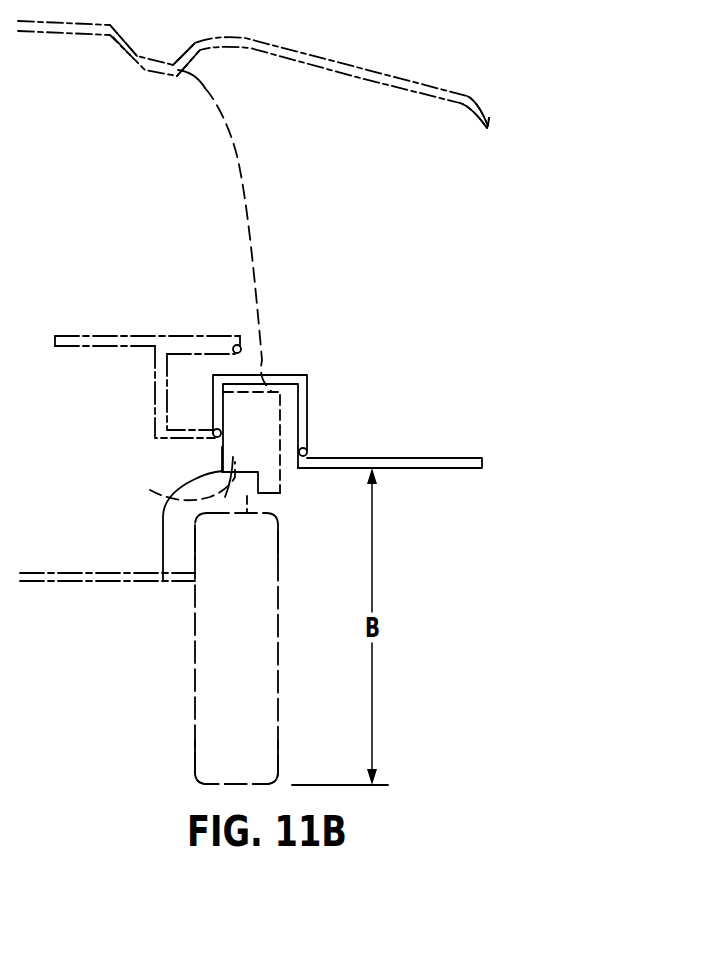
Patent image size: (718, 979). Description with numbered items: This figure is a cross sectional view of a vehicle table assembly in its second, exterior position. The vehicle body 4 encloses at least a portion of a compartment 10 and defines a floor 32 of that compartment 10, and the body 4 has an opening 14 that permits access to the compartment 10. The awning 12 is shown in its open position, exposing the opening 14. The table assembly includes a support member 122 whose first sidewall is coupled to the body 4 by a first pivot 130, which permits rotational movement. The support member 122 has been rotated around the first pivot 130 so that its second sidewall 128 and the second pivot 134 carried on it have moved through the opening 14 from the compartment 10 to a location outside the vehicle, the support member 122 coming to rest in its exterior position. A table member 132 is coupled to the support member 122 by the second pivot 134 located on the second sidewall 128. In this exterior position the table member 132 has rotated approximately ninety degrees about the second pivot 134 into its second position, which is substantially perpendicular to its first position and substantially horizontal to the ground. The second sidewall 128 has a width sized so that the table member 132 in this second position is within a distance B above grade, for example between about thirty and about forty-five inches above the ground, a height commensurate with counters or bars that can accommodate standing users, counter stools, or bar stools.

The vehicle body 4 is at (152, 490).
The compartment 10 is at (100, 298).
The awning 12 is at (315, 60).
The opening 14 is at (198, 183).
The floor 32 is at (33, 581).
The support member 122 is at (304, 387).
The second sidewall 128 is at (303, 425).
The first pivot 130 is at (216, 438).
The table member 132 is at (453, 463).
The second pivot 134 is at (308, 455).